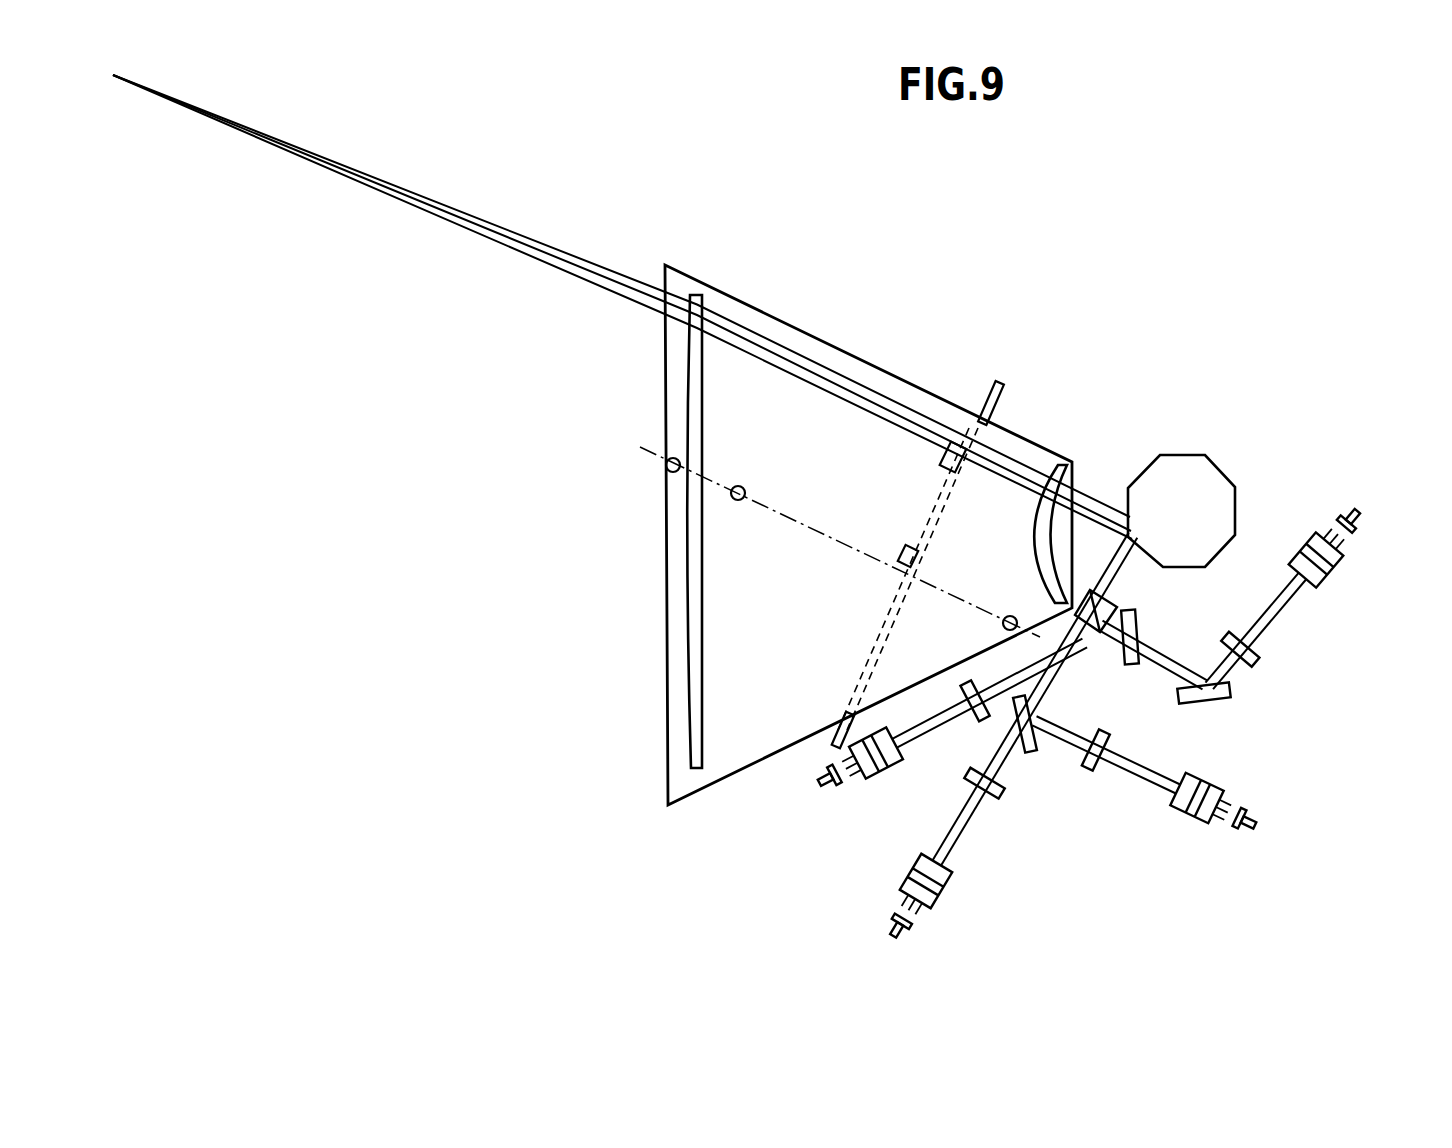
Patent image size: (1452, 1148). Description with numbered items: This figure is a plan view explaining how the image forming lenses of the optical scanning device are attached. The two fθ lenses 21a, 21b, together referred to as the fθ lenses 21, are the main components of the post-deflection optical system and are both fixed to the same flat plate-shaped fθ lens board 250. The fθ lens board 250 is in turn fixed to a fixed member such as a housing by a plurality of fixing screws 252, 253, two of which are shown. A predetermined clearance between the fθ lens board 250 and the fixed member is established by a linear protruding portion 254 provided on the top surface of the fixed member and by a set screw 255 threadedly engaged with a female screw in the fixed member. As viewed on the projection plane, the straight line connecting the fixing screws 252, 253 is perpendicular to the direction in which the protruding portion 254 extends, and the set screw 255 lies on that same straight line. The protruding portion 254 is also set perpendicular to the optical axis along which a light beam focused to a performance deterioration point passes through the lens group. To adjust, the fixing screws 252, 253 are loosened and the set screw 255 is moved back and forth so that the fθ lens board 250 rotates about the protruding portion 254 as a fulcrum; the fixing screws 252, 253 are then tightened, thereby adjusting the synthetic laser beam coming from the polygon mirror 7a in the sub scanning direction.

The fθ lens board 250 is at (886, 368).
The protruding portion 254 is at (1000, 413).
The polygon mirror 7a is at (1215, 480).
The fixing screw 252 is at (668, 466).
The set screw 255 is at (738, 502).
The fixing screw 253 is at (1003, 627).
The fθ lenses 21 is at (555, 663).
The fθ lens 21a is at (1045, 575).
The fθ lens 21b is at (688, 690).